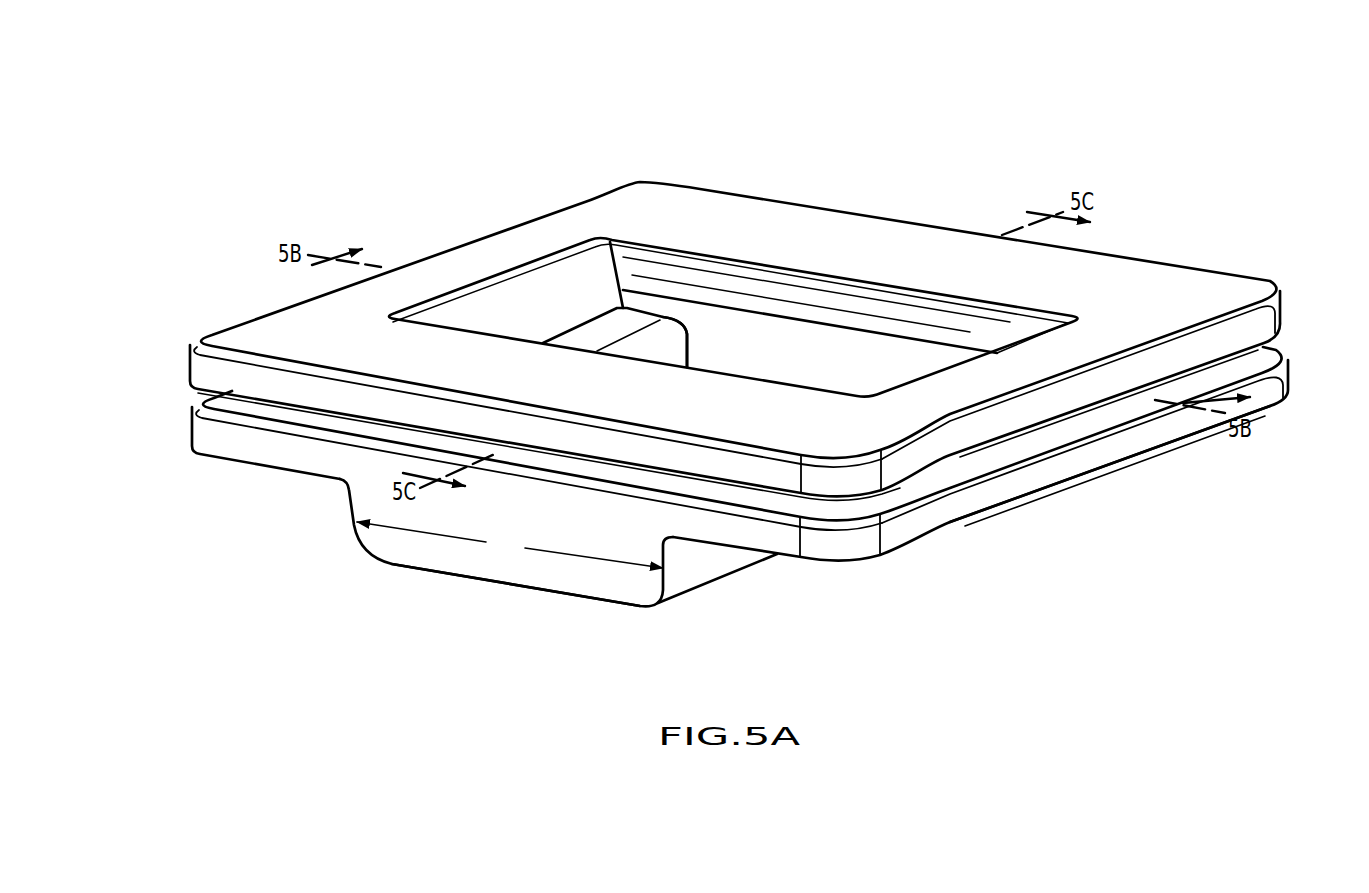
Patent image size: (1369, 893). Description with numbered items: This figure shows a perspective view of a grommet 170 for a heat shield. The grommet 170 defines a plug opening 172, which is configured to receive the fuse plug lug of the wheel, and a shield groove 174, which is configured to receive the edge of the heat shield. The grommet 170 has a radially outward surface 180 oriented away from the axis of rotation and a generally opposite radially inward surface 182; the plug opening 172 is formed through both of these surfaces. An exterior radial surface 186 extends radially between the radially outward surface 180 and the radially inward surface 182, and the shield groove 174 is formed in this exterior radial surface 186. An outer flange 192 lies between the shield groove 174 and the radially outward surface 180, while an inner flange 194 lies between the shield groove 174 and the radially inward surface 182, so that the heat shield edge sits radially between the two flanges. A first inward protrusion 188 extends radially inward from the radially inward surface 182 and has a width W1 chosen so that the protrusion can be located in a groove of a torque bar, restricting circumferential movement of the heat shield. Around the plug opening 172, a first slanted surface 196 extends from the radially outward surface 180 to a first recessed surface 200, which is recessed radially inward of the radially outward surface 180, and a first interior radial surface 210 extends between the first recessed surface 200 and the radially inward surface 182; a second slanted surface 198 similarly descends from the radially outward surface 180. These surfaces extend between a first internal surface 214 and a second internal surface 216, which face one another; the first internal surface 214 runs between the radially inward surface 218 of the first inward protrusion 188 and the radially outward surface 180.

The grommet 170 is at (378, 150).
The plug opening 172 is at (783, 340).
The shield groove 174 is at (877, 497).
The radially outward surface 180 is at (407, 363).
The radially inward surface 182 is at (943, 537).
The exterior radial surface 186 is at (1263, 328).
The first inward protrusion 188 is at (519, 570).
The outer flange 192 is at (182, 333).
The inner flange 194 is at (182, 405).
The first slanted surface 196 is at (474, 318).
The second slanted surface 198 is at (953, 368).
The first recessed surface 200 is at (607, 333).
The first interior radial surface 210 is at (667, 342).
The first internal surface 214 is at (787, 387).
The second internal surface 216 is at (900, 318).
The radially inward surface of first inward protrusion 218 is at (408, 572).
The width W1 is at (510, 545).